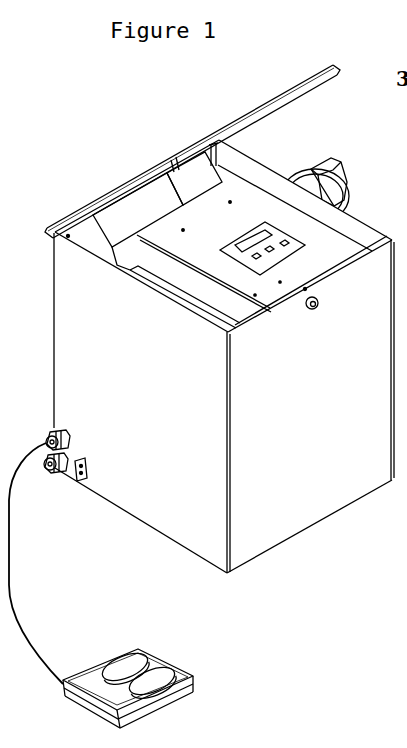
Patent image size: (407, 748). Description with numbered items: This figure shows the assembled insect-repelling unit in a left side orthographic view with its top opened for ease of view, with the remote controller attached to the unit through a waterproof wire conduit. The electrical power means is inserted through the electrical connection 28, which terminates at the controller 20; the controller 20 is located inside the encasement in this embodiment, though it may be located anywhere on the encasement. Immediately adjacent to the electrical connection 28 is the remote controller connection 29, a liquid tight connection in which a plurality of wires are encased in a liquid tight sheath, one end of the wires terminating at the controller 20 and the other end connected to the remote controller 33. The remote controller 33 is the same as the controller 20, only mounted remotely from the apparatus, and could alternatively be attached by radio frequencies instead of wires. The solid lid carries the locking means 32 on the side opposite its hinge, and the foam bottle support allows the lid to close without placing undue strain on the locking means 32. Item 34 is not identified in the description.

The controller 20 is at (279, 226).
The electrical connection 28 is at (53, 480).
The remote controller connection 29 is at (49, 428).
The locking means 32 is at (316, 312).
The remote controller 33 is at (172, 662).
The power switch 34 is at (88, 488).